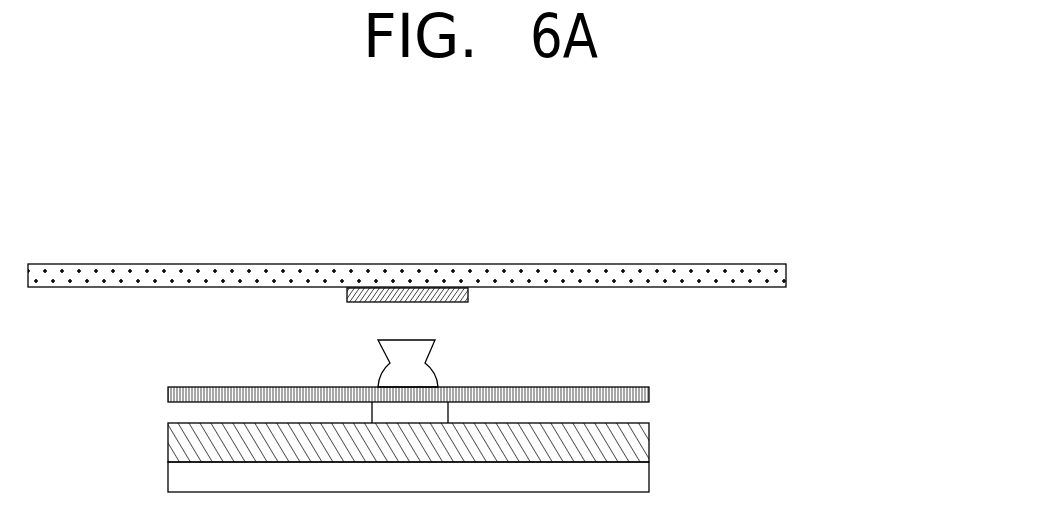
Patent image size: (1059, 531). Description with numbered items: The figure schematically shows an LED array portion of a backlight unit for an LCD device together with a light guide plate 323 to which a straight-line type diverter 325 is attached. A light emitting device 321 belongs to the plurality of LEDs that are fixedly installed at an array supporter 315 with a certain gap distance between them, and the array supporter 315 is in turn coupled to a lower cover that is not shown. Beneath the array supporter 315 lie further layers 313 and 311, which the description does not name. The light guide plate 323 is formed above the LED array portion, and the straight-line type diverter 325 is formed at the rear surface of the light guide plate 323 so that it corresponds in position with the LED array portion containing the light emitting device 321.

The substrate 311 is at (640, 477).
The insulating layer 313 is at (640, 437).
The array supporter 315 is at (641, 392).
The light emitting device 321 is at (428, 362).
The light guide plate 323 is at (775, 270).
The straight-line type diverter 325 is at (418, 288).